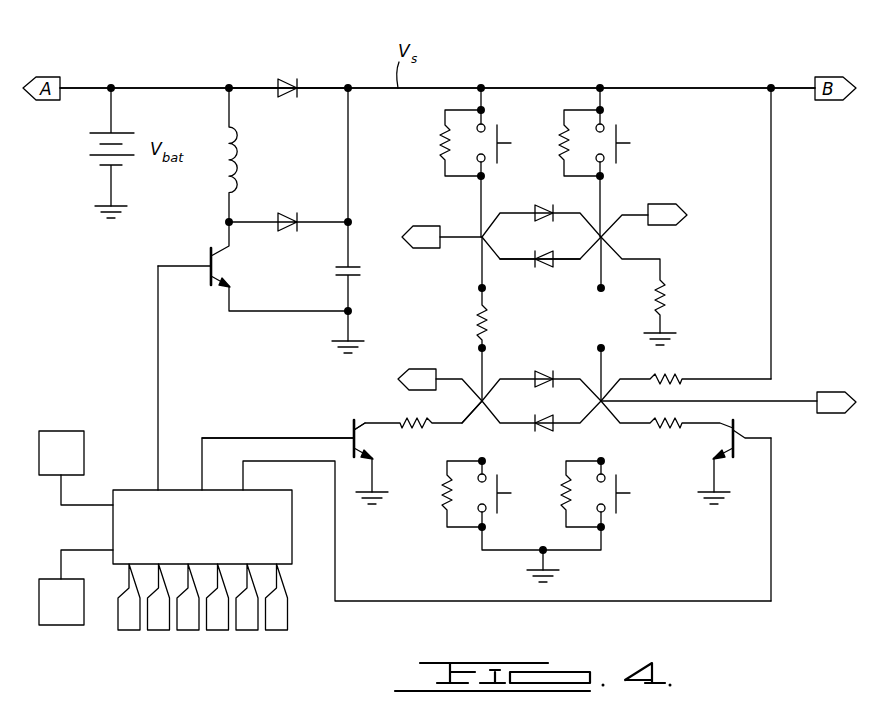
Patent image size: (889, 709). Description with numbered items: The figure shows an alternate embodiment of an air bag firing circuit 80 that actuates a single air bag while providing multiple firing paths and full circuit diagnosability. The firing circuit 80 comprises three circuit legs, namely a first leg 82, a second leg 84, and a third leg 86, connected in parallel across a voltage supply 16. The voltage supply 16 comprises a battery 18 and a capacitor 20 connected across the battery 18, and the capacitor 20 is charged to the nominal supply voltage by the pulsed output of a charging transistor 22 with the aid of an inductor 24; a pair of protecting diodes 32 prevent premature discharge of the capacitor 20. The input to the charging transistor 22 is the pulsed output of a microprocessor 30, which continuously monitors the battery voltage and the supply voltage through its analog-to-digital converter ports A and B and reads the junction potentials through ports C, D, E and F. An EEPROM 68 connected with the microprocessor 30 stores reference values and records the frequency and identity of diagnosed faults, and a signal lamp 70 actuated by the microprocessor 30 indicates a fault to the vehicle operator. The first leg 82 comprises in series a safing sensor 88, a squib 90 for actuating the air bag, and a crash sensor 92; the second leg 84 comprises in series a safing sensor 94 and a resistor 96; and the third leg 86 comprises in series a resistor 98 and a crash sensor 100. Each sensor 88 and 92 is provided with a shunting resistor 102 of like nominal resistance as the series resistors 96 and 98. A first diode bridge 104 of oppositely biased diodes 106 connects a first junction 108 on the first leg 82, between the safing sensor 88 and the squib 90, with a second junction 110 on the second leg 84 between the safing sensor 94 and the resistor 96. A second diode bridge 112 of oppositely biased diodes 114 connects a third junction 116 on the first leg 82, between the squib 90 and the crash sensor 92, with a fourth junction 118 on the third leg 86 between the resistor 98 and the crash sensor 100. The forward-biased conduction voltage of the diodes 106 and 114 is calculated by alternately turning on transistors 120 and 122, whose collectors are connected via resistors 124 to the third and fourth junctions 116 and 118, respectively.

The voltage supply 16 is at (268, 66).
The battery 18 is at (90, 152).
The capacitor 20 is at (361, 271).
The charging transistor 22 is at (232, 270).
The inductor 24 is at (244, 152).
The microprocessor 30 is at (292, 548).
The protecting diodes 32 is at (300, 97).
The EEPROM 68 is at (84, 445).
The signal lamp 70 is at (55, 626).
The firing circuit 80 is at (800, 502).
The first circuit leg 82 is at (481, 100).
The second circuit leg 84 is at (601, 100).
The third circuit leg 86 is at (771, 185).
The safing sensor 88 is at (500, 162).
The squib 90 is at (481, 306).
The crash sensor 92 is at (500, 512).
The safing sensor 94 is at (616, 155).
The resistor 96 is at (662, 291).
The resistor 98 is at (680, 375).
The crash sensor 100 is at (618, 512).
The shunting resistor 102 is at (443, 141).
The first diode bridge 104 is at (552, 276).
The diodes 106 is at (531, 262).
The first junction 108 is at (482, 237).
The second junction 110 is at (601, 237).
The second diode bridge 112 is at (545, 377).
The diodes 114 is at (541, 388).
The third junction 116 is at (482, 401).
The fourth junction 118 is at (601, 401).
The transistor 120 is at (357, 440).
The transistor 122 is at (735, 427).
The resistors 124 is at (410, 420).